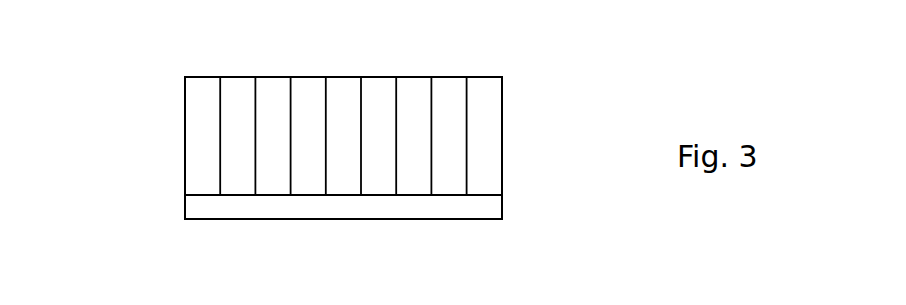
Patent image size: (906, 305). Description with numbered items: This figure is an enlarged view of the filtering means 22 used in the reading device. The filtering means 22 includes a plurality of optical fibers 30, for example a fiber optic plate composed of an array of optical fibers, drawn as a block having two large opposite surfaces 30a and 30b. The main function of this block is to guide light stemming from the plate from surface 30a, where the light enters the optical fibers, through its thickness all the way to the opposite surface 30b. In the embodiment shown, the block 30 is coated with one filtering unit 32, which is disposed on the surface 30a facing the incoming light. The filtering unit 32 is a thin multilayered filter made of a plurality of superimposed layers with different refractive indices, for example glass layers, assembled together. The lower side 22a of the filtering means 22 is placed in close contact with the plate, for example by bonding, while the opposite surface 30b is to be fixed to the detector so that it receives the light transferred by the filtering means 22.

The filtering means 22 is at (97, 112).
The side of filtering means 22a is at (476, 219).
The plurality of optical fibers 30 is at (502, 132).
The surface of the block 30a is at (196, 195).
The opposite surface of the block 30b is at (203, 77).
The filtering unit 32 is at (502, 208).